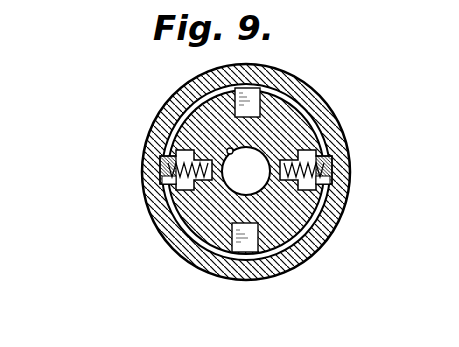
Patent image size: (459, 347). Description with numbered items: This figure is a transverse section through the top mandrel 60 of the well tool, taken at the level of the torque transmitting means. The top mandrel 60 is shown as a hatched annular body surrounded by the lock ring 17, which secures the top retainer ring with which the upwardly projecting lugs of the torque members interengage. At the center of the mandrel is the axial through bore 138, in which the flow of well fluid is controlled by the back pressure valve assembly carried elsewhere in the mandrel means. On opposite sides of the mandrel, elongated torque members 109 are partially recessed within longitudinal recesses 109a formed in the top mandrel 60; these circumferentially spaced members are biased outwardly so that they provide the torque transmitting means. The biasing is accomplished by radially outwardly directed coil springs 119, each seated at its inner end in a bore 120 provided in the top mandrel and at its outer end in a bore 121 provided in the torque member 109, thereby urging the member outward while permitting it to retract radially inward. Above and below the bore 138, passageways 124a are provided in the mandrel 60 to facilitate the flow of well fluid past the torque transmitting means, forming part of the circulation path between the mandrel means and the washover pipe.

The lock ring 17 is at (168, 240).
The top mandrel 60 is at (298, 127).
The passageways 124a is at (257, 94).
The bores 120 is at (274, 169).
The axial through bore 138 is at (227, 150).
The longitudinal recesses 109a is at (174, 156).
The torque members 109 is at (168, 168).
The coil springs 119 is at (172, 184).
The bores 121 is at (322, 170).